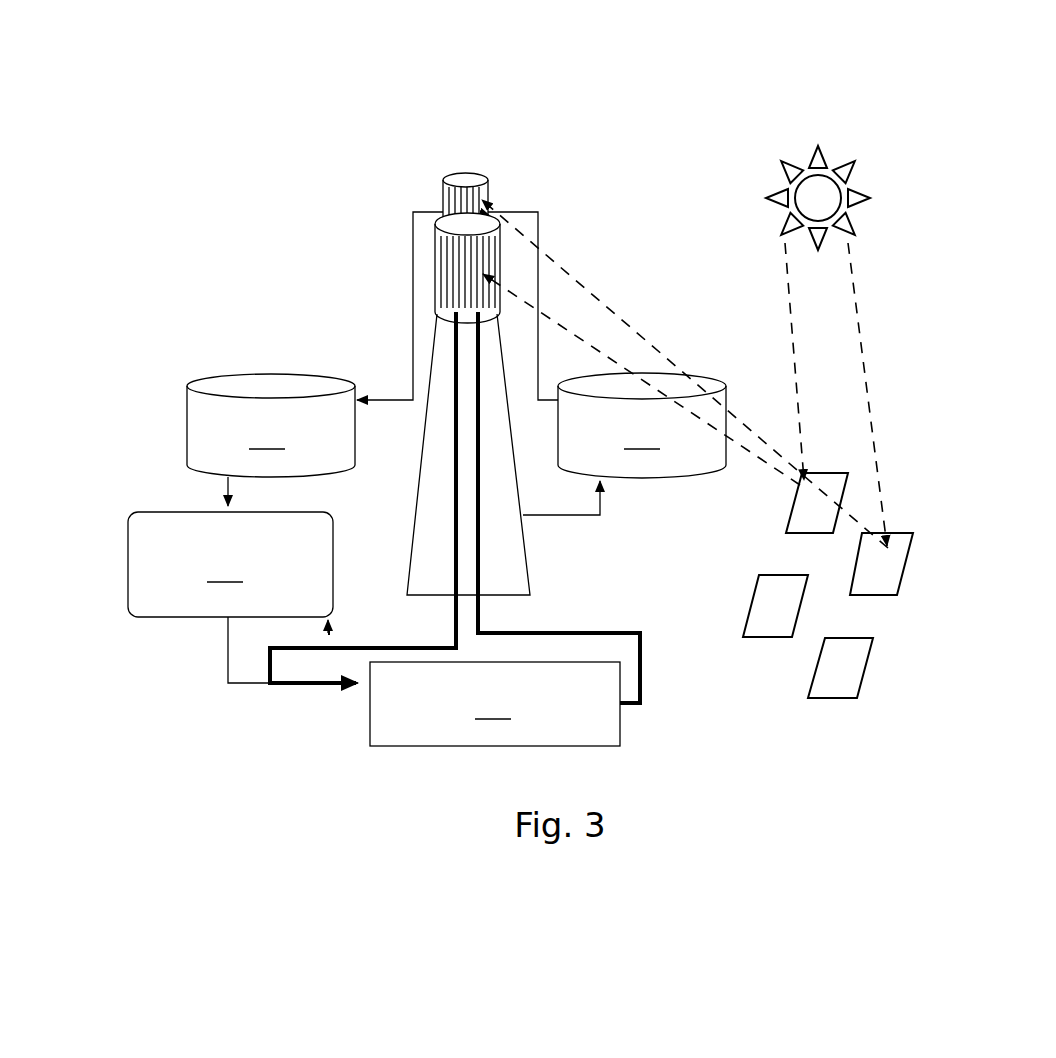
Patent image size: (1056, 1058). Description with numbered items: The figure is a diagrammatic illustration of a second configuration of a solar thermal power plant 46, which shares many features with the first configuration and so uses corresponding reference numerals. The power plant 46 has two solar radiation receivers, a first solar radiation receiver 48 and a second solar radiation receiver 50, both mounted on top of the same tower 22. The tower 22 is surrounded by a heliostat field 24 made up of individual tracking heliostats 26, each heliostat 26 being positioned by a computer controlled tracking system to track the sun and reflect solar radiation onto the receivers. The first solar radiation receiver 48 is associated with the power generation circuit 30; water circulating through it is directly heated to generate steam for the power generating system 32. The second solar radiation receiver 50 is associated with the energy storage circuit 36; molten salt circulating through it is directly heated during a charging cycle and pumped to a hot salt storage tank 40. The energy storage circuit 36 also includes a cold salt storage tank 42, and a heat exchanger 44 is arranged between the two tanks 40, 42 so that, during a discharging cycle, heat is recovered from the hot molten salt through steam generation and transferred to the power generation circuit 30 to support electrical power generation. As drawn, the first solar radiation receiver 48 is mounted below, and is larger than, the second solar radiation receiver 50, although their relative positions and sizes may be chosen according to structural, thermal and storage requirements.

The solar thermal power plant 46 is at (642, 86).
The second solar radiation receiver 50 is at (441, 184).
The first solar radiation receiver 48 is at (508, 243).
The tower 22 is at (432, 328).
The energy storage circuit 36 is at (409, 350).
The hot salt storage tank 40 is at (271, 440).
The cold salt storage tank 42 is at (624, 444).
The heat exchanger 44 is at (230, 597).
The power generating system 32 is at (495, 704).
The power generation circuit 30 is at (486, 558).
The heliostat 26 is at (840, 488).
The heliostat field 24 is at (909, 632).